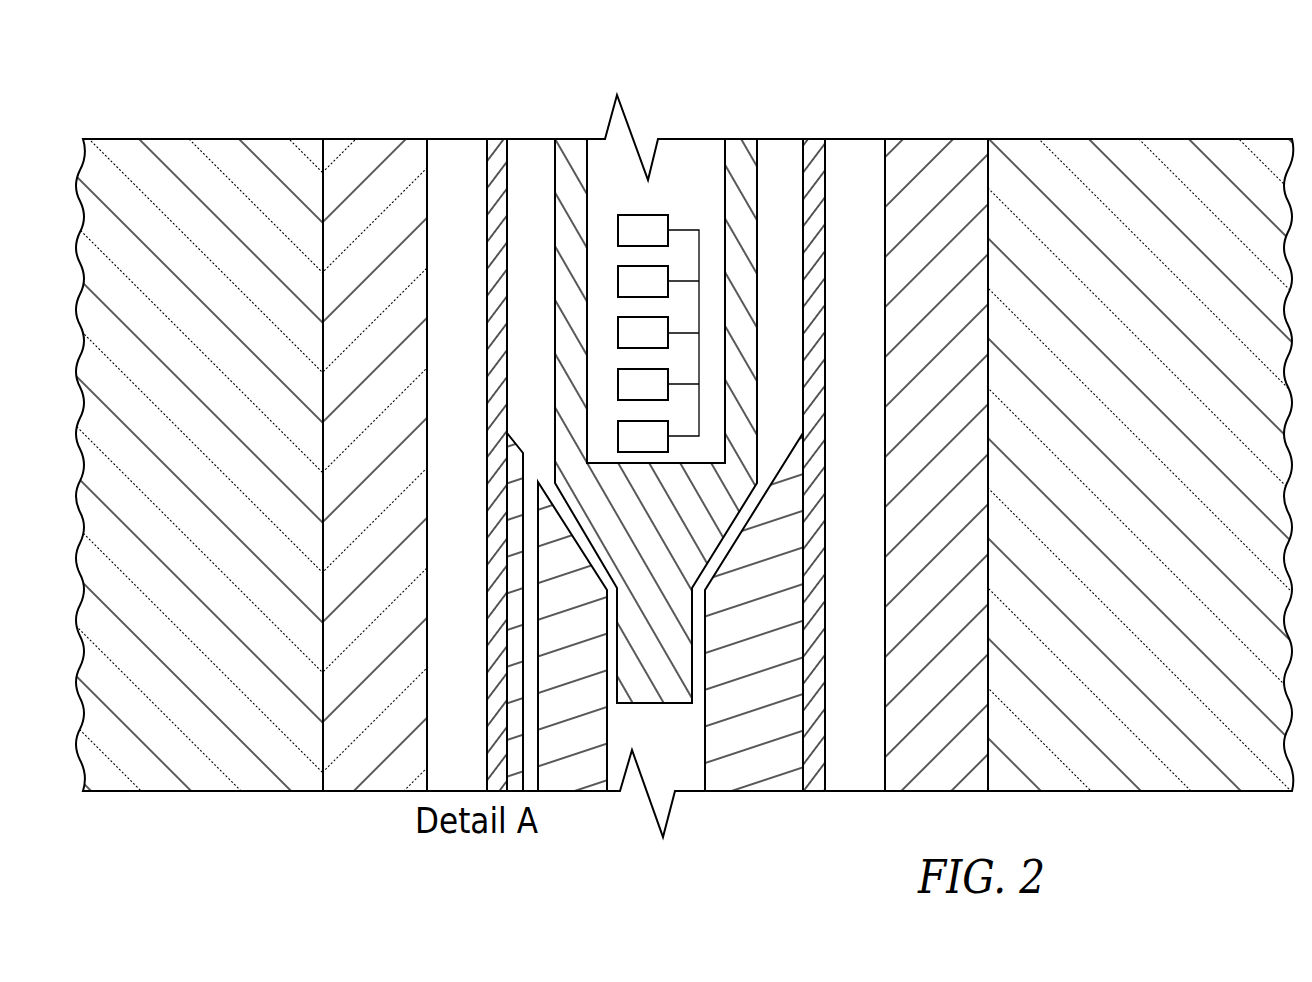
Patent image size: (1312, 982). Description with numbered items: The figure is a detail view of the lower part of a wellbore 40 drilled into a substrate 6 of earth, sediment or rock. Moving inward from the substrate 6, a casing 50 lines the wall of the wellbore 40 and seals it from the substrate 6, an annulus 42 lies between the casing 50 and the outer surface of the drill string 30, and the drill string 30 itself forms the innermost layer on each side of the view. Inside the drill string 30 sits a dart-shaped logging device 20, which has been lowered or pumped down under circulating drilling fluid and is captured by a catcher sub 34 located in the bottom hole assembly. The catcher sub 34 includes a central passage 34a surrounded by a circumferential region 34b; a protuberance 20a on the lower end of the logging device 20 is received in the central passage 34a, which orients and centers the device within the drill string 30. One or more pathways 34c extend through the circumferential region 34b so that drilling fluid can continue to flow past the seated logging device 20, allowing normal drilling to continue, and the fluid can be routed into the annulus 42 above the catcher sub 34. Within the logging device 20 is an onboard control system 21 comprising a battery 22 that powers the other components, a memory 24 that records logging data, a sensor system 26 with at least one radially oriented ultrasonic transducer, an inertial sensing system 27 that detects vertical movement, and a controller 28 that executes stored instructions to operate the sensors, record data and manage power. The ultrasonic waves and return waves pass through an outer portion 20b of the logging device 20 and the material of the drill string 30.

The substrate 6 is at (205, 780).
The logging device 20 is at (652, 380).
The protuberance 20a is at (653, 655).
The outer portion 20b is at (580, 206).
The onboard control system 21 is at (692, 226).
The battery 22 is at (643, 230).
The memory 24 is at (643, 281).
The sensor system 26 is at (643, 332).
The inertial sensing system 27 is at (643, 384).
The controller 28 is at (643, 436).
The drill string 30 is at (493, 137).
The catcher sub 34 is at (656, 665).
The central passage 34a is at (663, 762).
The circumferential region 34b is at (570, 780).
The pathways 34c is at (528, 530).
The wellbore 40 is at (422, 72).
The annulus 42 is at (457, 137).
The casing 50 is at (370, 137).